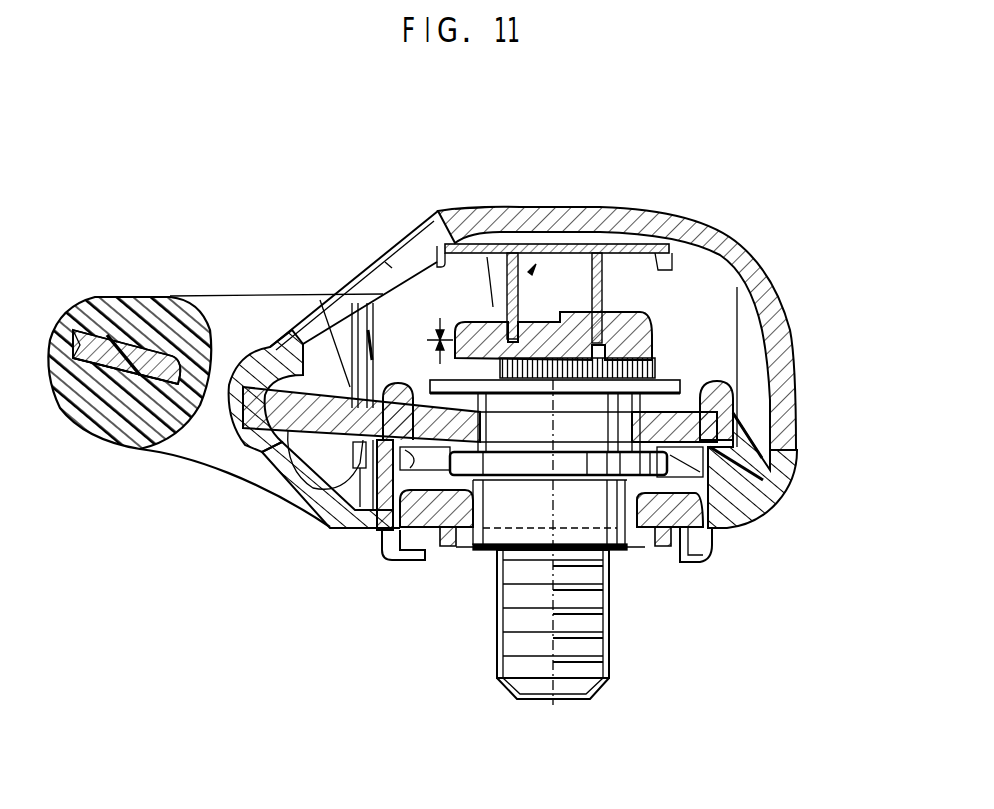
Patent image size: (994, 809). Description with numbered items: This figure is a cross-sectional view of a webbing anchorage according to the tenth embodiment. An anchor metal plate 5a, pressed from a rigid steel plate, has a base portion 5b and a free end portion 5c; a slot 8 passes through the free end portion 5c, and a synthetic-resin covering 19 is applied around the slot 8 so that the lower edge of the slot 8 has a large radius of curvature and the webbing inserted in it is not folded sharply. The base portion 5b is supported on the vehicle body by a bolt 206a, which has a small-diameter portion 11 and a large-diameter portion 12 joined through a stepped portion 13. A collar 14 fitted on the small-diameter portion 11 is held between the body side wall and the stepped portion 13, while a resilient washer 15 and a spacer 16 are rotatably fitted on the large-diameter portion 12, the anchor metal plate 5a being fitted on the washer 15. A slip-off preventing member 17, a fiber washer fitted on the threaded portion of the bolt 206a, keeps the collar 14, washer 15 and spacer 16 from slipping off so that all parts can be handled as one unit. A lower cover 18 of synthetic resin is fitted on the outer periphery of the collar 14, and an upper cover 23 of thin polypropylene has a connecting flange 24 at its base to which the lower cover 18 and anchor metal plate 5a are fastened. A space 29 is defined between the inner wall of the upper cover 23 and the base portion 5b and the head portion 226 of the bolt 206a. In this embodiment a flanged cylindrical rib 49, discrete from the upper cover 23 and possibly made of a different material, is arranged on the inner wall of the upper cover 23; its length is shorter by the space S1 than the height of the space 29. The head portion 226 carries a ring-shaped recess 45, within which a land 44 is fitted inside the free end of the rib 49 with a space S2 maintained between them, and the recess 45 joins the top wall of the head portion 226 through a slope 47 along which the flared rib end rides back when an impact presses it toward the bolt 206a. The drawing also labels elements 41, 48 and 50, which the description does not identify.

The small-diameter portion 11 is at (495, 660).
The large-diameter portion 12 is at (450, 384).
The stepped portion 13 is at (462, 485).
The collar 14 is at (497, 550).
The washer 15 is at (527, 428).
The spacer 16 is at (420, 535).
The slip-off preventing member 17 is at (613, 553).
The lower cover 18 is at (780, 503).
The covering 19 is at (80, 390).
The upper cover 23 is at (570, 300).
The connecting flange 24 is at (797, 425).
The space 29 is at (472, 295).
The plate 41 is at (577, 244).
The land 44 is at (590, 244).
The recess 45 is at (472, 208).
The slope 47 is at (613, 316).
The gear body 48 is at (607, 330).
The flanged cylindrical rib 49 is at (450, 212).
The hook 50 is at (443, 250).
The head portion 226 is at (647, 352).
The anchor metal plate 5a is at (312, 442).
The base portion 5b is at (690, 555).
The free end portion 5c is at (118, 375).
The slot 8 is at (198, 402).
The bolt 206a is at (562, 668).
The space S1 is at (380, 260).
The space S2 is at (528, 272).